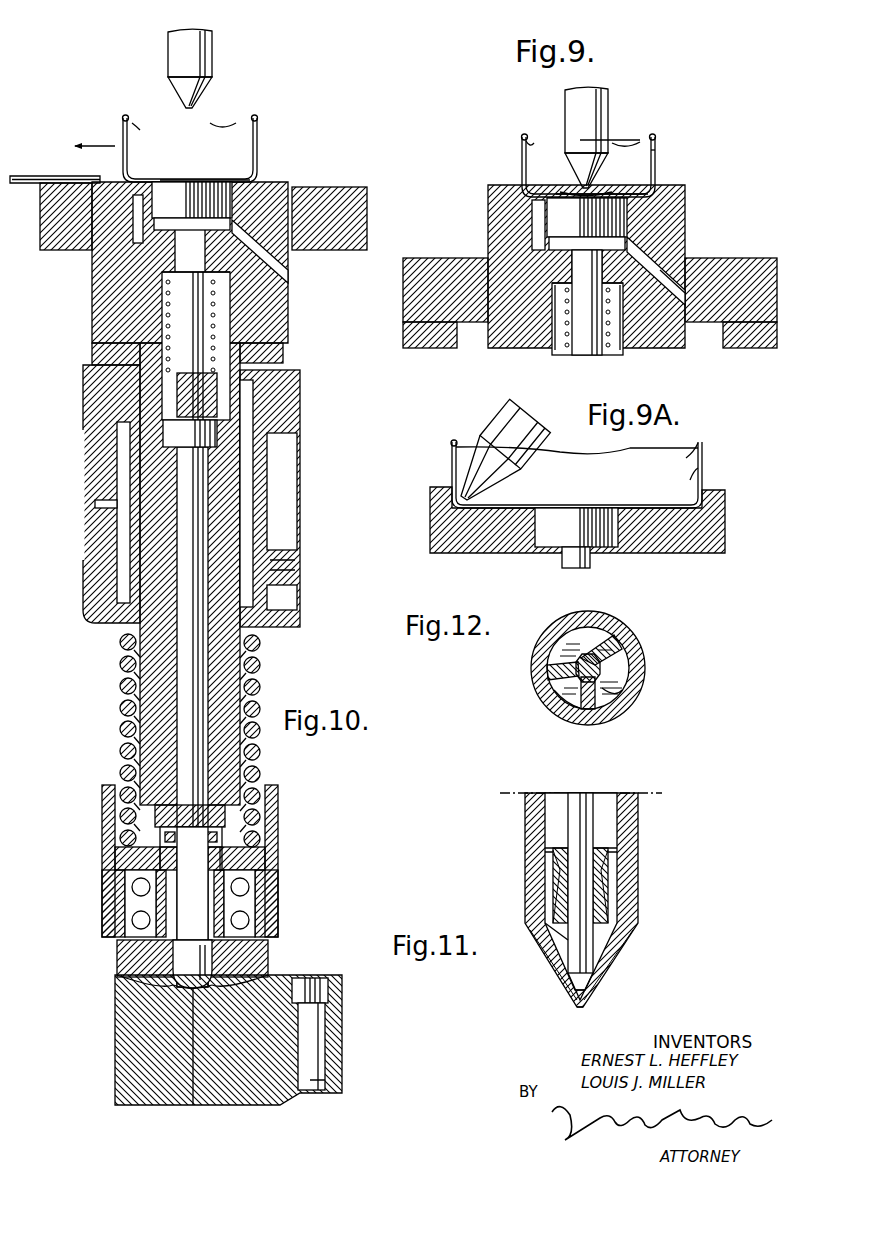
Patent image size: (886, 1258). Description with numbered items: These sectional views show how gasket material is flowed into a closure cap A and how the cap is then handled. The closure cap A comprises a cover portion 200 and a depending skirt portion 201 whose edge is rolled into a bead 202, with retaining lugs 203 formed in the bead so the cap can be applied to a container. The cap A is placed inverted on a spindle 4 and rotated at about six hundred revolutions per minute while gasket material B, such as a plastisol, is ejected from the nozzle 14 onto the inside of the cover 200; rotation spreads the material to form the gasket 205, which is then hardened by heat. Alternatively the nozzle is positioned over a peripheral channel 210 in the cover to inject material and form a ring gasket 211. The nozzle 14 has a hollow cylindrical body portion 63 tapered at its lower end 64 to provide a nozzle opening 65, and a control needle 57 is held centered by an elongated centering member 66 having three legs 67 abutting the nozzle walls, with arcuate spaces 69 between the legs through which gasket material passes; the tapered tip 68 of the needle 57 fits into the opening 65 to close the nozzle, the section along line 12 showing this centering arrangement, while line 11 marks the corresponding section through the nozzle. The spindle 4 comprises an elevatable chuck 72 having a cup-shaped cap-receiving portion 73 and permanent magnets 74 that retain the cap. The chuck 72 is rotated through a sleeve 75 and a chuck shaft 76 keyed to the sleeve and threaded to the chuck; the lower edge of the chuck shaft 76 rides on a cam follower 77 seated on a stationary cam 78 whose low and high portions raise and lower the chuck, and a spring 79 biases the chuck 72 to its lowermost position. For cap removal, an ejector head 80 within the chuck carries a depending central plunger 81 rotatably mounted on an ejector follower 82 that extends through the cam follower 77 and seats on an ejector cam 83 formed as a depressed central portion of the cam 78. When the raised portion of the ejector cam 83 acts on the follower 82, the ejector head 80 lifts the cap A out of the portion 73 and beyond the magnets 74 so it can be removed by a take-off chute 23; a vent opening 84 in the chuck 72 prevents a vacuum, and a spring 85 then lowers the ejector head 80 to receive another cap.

In FIG. 10, the spindle 4 is at (298, 578).
In FIG. 9, the spindle 4 is at (460, 252).
In FIG. 10, the section line 11 is at (192, 22).
In FIG. 11, the section line 12 is at (515, 825).
In FIG. 10, the nozzle 14 is at (214, 58).
In FIG. 9, the nozzle 14 is at (610, 98).
In FIG. 9A, the nozzle 14 is at (500, 412).
In FIG. 10, the take-off chute 23 is at (22, 176).
In FIG. 12, the control needle 57 is at (594, 658).
In FIG. 11, the control needle 57 is at (593, 805).
In FIG. 12, the hollow cylindrical body portion 63 is at (562, 626).
In FIG. 11, the hollow cylindrical body portion 63 is at (638, 912).
In FIG. 11, the lower end 64 is at (620, 950).
In FIG. 11, the nozzle opening 65 is at (575, 1003).
In FIG. 12, the centering member 66 is at (553, 700).
In FIG. 11, the centering member 66 is at (563, 929).
In FIG. 12, the legs 67 is at (625, 688).
In FIG. 11, the legs 67 is at (555, 897).
In FIG. 11, the tapered tip 68 is at (600, 986).
In FIG. 12, the arcuate spaces 69 is at (614, 650).
In FIG. 11, the arcuate spaces 69 is at (608, 880).
In FIG. 10, the chuck 72 is at (278, 192).
In FIG. 9, the chuck 72 is at (690, 236).
In FIG. 10, the cup-shaped cap-receiving portion 73 is at (252, 186).
In FIG. 9, the cup-shaped cap-receiving portion 73 is at (640, 196).
In FIG. 10, the permanent magnets 74 is at (110, 252).
In FIG. 9, the permanent magnets 74 is at (535, 224).
In FIG. 10, the sleeve 75 is at (270, 452).
In FIG. 10, the chuck shaft 76 is at (245, 352).
In FIG. 10, the cam follower 77 is at (272, 958).
In FIG. 10, the stationary cam 78 is at (115, 1001).
In FIG. 10, the spring 79 is at (262, 766).
In FIG. 10, the ejector head 80 is at (158, 193).
In FIG. 9, the ejector head 80 is at (630, 215).
In FIG. 9A, the ejector head 80 is at (553, 540).
In FIG. 10, the central plunger 81 is at (200, 487).
In FIG. 9, the central plunger 81 is at (583, 345).
In FIG. 10, the ejector follower 82 is at (200, 903).
In FIG. 10, the ejector cam 83 is at (182, 989).
In FIG. 10, the vent opening 84 is at (290, 280).
In FIG. 9, the vent opening 84 is at (697, 260).
In FIG. 10, the spring 85 is at (215, 335).
In FIG. 9, the cover portion 200 is at (621, 197).
In FIG. 9, the skirt portion 201 is at (660, 160).
In FIG. 9, the bead 202 is at (643, 138).
In FIG. 9, the retaining lugs 203 is at (531, 140).
In FIG. 10, the gasket 205 is at (235, 172).
In FIG. 9A, the peripheral channel 210 is at (455, 500).
In FIG. 9A, the ring gasket 211 is at (690, 480).
In FIG. 10, the closure cap A is at (263, 128).
In FIG. 9, the closure cap A is at (662, 147).
In FIG. 9A, the closure cap A is at (598, 446).
In FIG. 9, the gasket material B is at (576, 189).